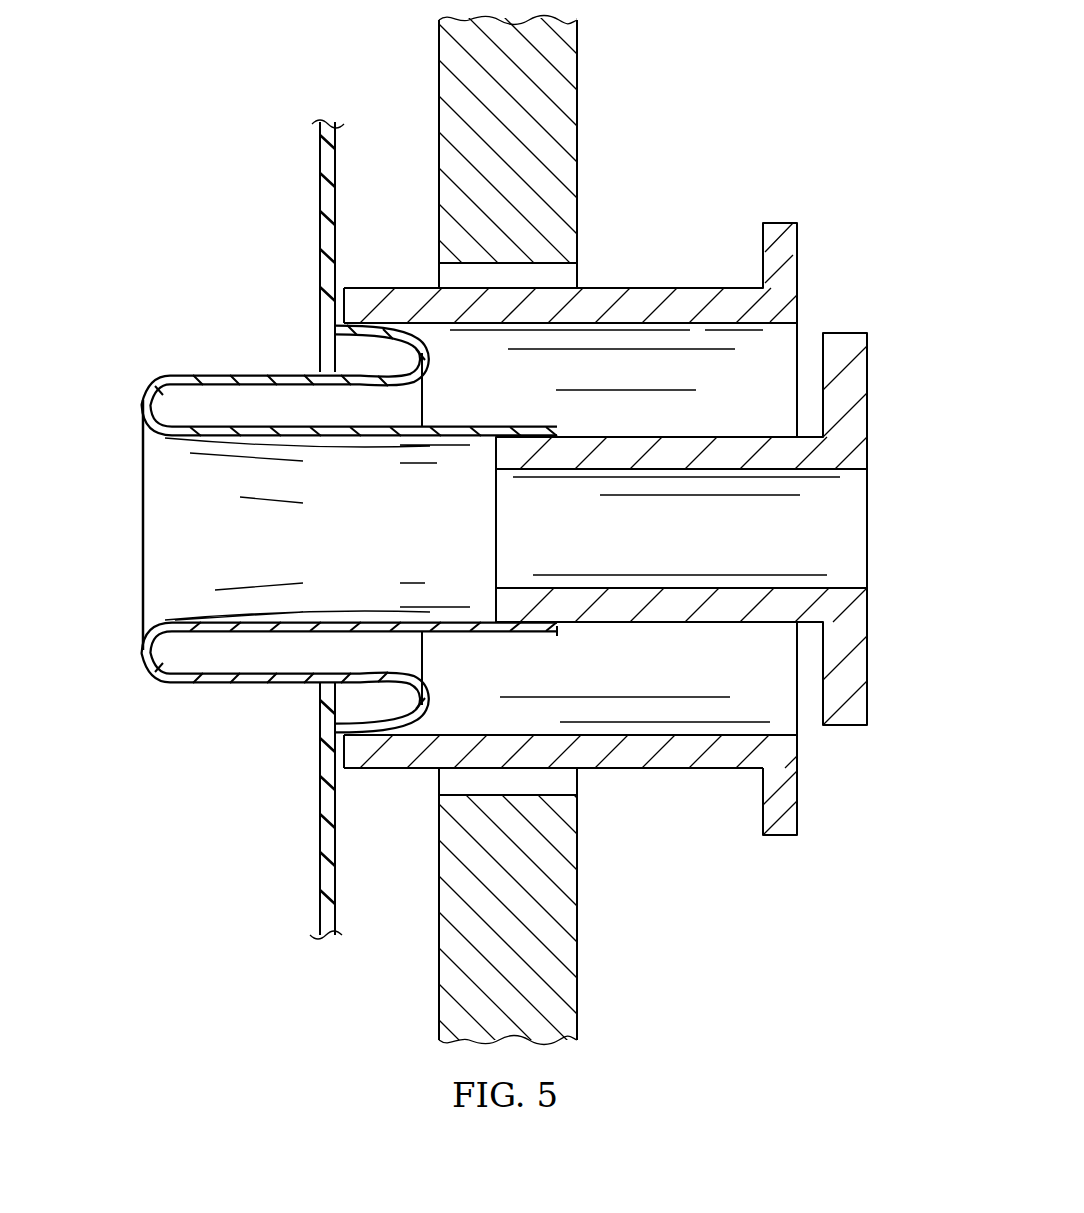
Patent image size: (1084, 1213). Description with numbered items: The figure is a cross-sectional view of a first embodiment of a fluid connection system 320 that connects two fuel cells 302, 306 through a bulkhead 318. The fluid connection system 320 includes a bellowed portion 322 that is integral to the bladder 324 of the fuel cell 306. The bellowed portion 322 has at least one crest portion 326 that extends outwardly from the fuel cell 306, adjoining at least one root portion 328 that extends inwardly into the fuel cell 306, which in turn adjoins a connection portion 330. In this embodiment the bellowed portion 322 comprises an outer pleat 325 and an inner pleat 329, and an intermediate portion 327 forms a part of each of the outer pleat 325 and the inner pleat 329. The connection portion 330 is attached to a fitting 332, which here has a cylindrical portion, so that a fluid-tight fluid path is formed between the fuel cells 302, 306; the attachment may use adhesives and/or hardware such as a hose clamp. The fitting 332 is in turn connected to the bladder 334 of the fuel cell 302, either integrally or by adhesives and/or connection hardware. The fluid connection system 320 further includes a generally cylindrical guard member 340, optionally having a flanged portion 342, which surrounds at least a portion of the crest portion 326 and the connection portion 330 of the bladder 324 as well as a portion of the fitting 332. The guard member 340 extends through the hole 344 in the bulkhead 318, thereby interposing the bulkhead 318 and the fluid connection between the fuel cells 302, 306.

The fuel cell 302 is at (940, 543).
The fuel cell 306 is at (108, 543).
The bulkhead 318 is at (578, 60).
The fluid connection system 320 is at (606, 437).
The bellowed portion 322 is at (128, 363).
The bladder 324 is at (318, 180).
The outer pleat 325 is at (345, 357).
The crest portion 326 is at (424, 390).
The intermediate portion 327 is at (253, 373).
The root portion 328 is at (142, 433).
The inner pleat 329 is at (194, 654).
The connection portion 330 is at (531, 633).
The fitting 332 is at (717, 529).
The bladder 334 is at (867, 677).
The guard member 340 is at (690, 770).
The flanged portion 342 is at (797, 805).
The hole 344 is at (578, 280).